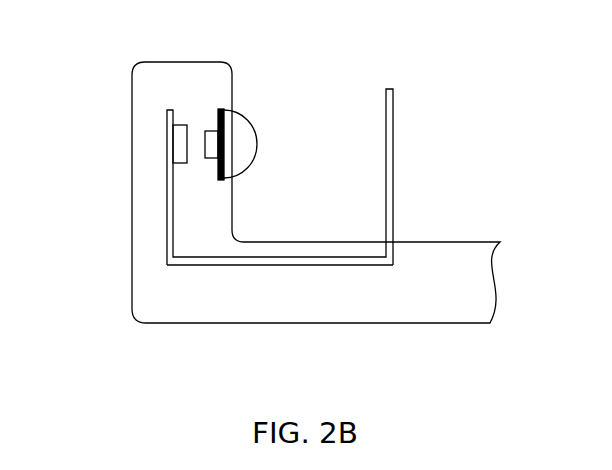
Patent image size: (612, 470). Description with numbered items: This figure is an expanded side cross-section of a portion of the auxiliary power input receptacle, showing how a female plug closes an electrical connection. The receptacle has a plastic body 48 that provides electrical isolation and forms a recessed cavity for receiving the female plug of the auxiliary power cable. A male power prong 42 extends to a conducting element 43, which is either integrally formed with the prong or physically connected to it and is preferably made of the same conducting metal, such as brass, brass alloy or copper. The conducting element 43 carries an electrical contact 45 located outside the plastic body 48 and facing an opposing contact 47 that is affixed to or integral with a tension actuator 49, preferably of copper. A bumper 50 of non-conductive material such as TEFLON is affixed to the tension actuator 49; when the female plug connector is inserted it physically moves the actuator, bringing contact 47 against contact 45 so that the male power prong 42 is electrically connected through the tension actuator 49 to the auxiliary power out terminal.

The male power prong 42 is at (280, 224).
The conducting element 43 is at (342, 265).
The electrical contact 45 is at (180, 150).
The contact 47 is at (211, 131).
The plastic body 48 is at (128, 100).
The tension actuator 49 is at (232, 176).
The bumper 50 is at (244, 130).